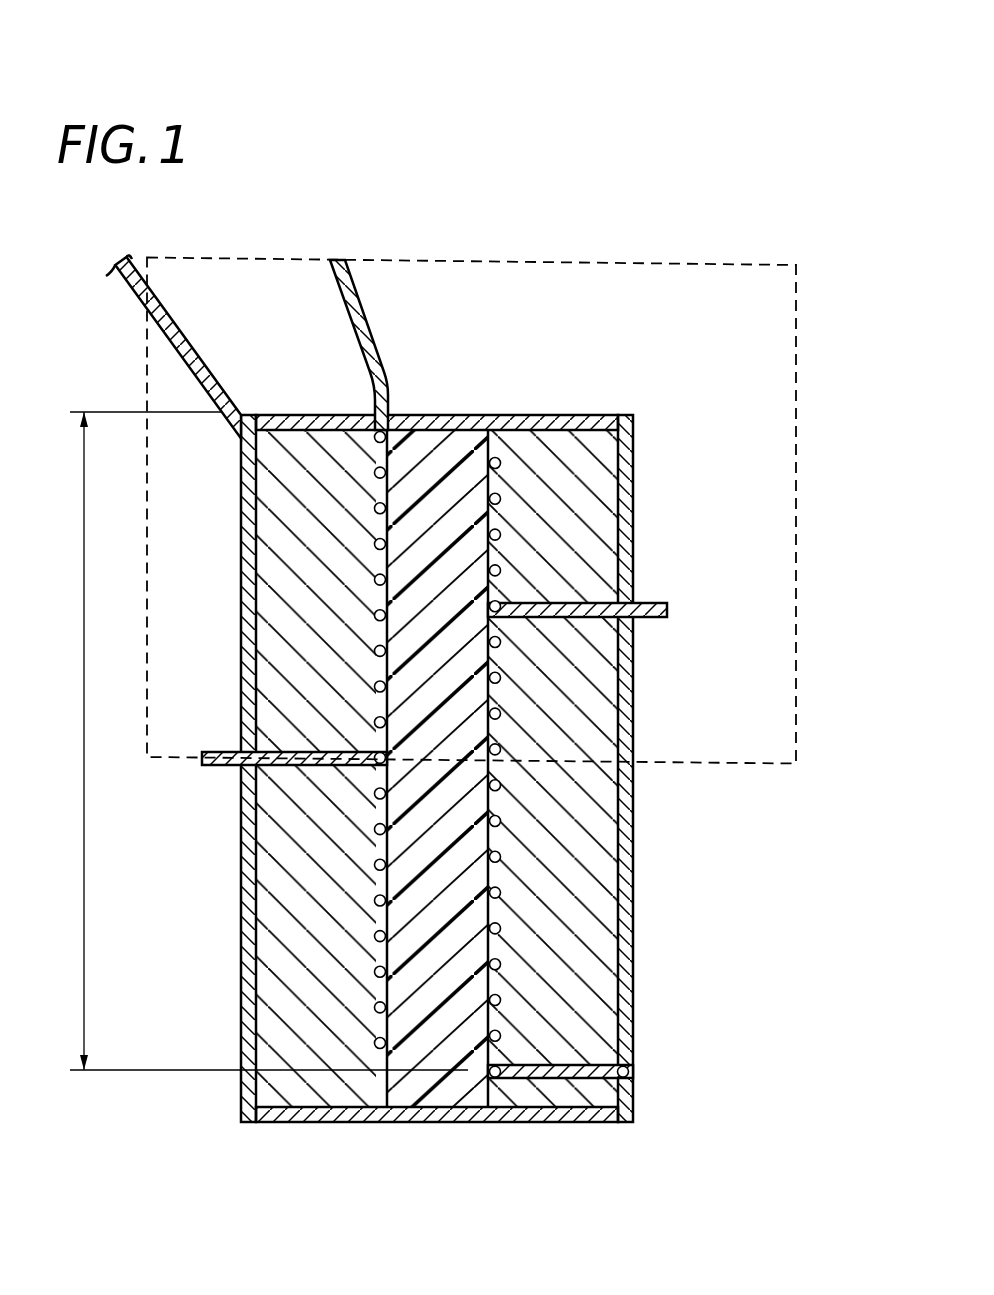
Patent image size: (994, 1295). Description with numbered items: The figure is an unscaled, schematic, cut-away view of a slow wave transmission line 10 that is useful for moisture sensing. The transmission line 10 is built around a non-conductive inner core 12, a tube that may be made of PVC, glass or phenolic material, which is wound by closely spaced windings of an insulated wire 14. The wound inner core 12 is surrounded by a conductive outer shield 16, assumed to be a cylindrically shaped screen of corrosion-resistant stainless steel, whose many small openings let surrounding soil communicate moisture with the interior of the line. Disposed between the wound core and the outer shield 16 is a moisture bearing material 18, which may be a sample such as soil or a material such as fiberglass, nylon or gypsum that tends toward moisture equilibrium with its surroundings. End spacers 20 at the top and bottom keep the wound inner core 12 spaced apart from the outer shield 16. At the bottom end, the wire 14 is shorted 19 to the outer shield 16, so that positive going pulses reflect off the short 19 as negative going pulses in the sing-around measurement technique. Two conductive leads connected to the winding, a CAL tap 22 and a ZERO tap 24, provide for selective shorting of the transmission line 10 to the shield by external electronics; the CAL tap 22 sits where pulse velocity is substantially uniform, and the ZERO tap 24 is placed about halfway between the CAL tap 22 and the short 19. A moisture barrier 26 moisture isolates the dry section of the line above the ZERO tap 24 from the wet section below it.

The slow wave transmission line 10 is at (488, 162).
The non-conductive inner core 12 is at (463, 442).
The insulated wire 14 is at (410, 443).
The conductive outer shield 16 is at (633, 697).
The moisture bearing material 18 is at (592, 933).
The short 19 is at (565, 1065).
The end spacers 20 is at (552, 415).
The CAL tap 22 is at (660, 600).
The ZERO tap 24 is at (217, 765).
The moisture barrier 26 is at (796, 537).